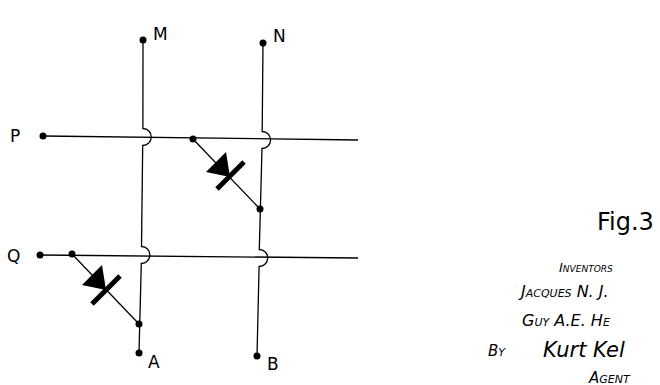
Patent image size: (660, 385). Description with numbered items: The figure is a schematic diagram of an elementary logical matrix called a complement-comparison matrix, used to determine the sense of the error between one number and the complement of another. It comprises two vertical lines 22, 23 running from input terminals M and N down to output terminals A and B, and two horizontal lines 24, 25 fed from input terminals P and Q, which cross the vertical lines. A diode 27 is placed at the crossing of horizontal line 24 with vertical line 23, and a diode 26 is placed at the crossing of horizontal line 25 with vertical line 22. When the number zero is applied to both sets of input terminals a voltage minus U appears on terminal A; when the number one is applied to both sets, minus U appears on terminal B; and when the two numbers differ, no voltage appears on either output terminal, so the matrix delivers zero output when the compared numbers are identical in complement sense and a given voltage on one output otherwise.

The vertical line 22 is at (142, 338).
The vertical line 23 is at (260, 337).
The horizontal line 24 is at (313, 137).
The horizontal line 25 is at (313, 255).
The diode 26 is at (84, 289).
The diode 27 is at (216, 174).